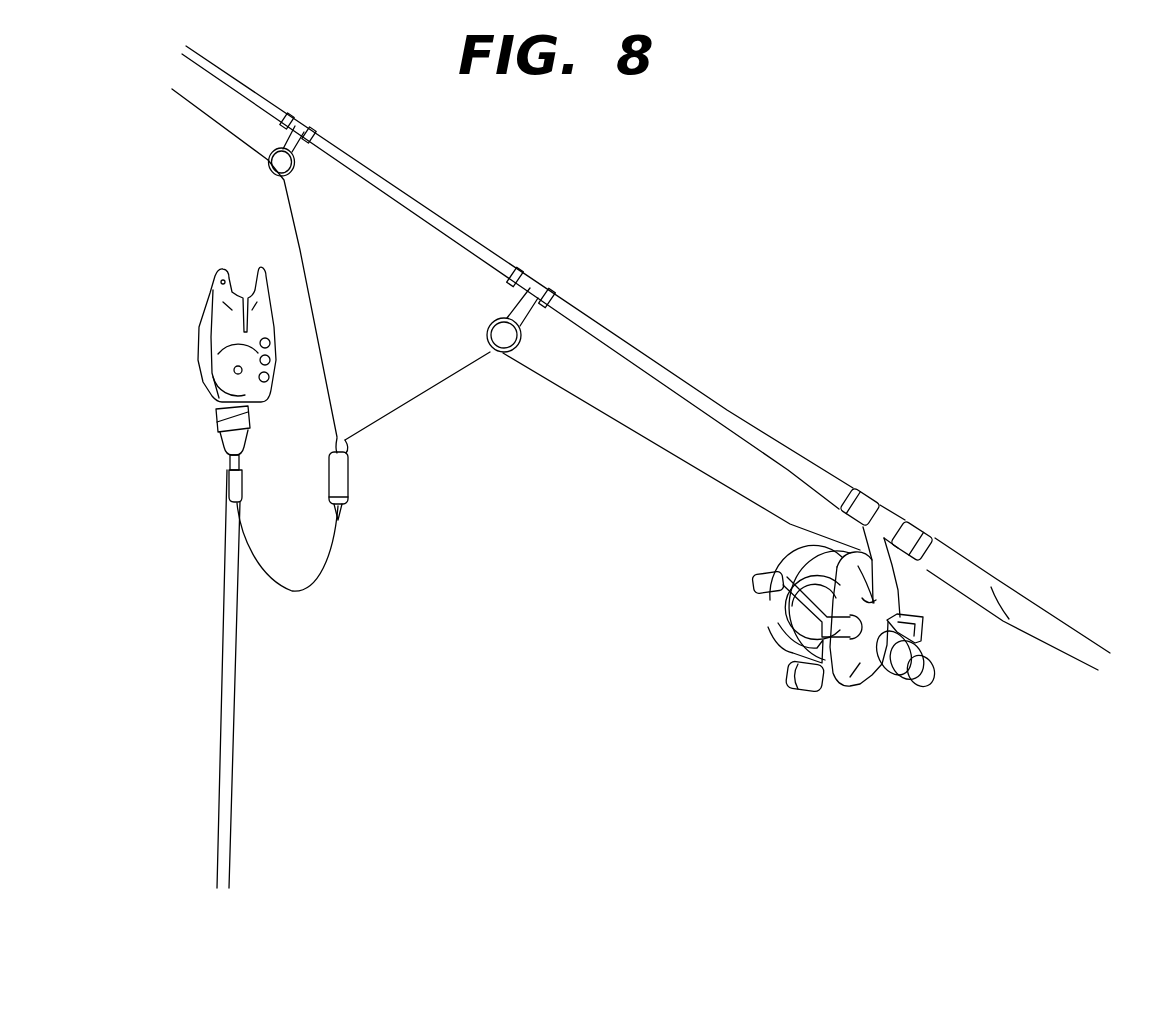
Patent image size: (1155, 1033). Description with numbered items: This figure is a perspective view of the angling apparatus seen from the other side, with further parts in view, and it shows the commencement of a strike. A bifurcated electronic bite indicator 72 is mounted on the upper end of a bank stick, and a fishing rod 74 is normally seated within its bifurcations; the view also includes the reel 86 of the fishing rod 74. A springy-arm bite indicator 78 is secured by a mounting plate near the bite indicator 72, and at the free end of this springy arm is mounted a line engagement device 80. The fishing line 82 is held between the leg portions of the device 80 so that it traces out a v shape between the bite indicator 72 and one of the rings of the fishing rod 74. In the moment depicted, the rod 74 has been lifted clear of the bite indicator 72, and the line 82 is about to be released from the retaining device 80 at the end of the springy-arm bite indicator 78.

The electronic bite indicator 72 is at (200, 331).
The fishing rod 74 is at (672, 378).
The springy-arm bite indicator 78 is at (297, 590).
The line engagement device 80 is at (352, 452).
The fishing line 82 is at (412, 402).
The reel 86 is at (772, 633).